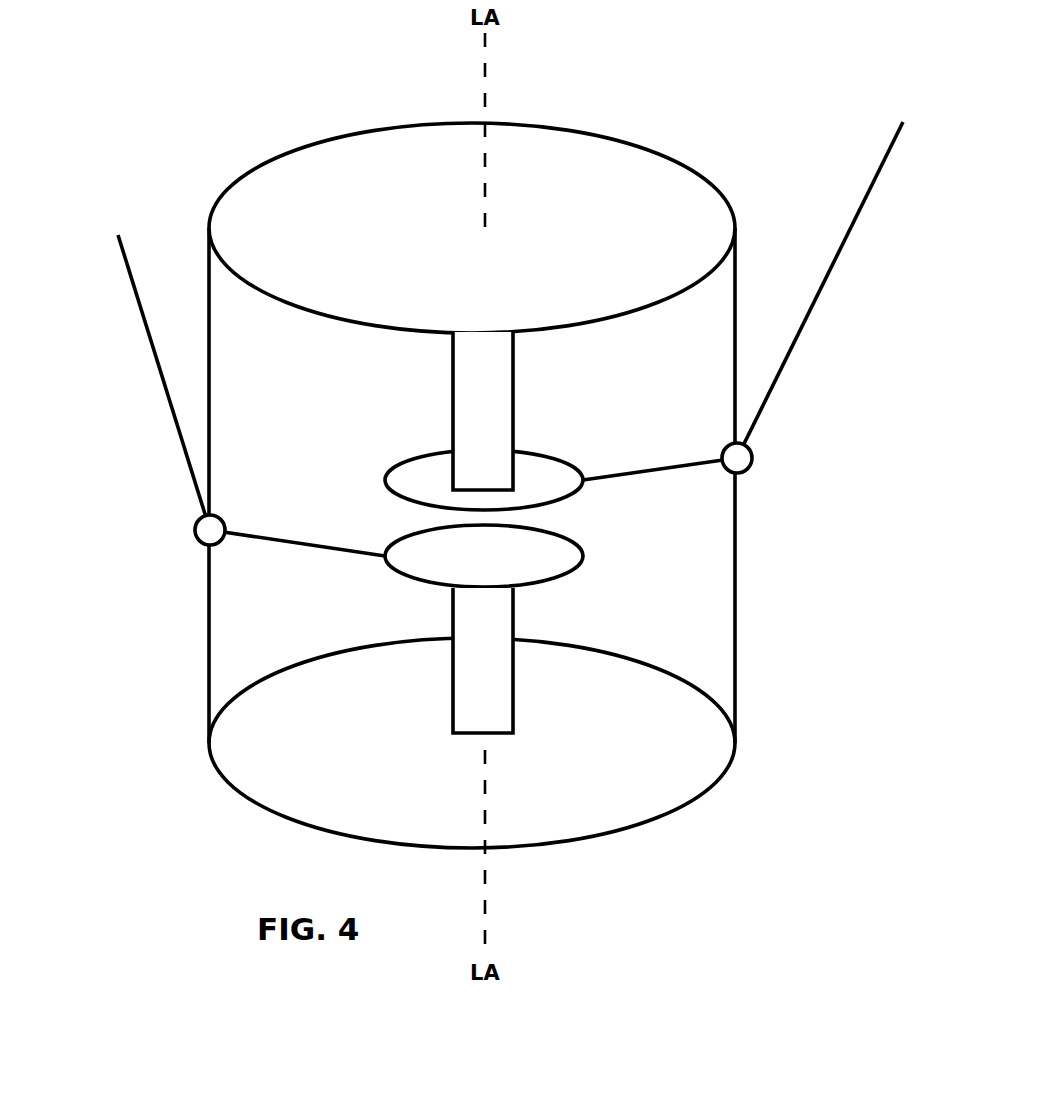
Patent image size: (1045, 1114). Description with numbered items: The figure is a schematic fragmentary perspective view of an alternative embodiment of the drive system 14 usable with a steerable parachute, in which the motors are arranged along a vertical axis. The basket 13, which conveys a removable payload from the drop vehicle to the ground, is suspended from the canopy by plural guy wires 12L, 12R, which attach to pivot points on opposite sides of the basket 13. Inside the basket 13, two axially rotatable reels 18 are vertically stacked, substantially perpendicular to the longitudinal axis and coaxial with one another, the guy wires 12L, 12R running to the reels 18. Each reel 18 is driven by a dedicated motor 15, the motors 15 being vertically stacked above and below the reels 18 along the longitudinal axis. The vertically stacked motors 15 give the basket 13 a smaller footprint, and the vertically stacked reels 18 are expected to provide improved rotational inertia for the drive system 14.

The guy wire 12L is at (158, 367).
The guy wire 12R is at (827, 290).
The basket 13 is at (207, 650).
The drive system 14 is at (138, 550).
The motor 15 is at (486, 358).
The axially rotatable reel 18 is at (565, 496).